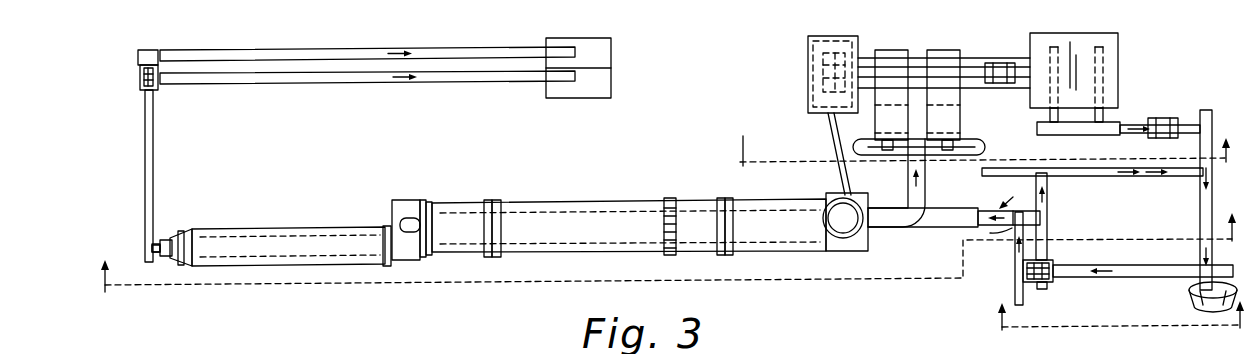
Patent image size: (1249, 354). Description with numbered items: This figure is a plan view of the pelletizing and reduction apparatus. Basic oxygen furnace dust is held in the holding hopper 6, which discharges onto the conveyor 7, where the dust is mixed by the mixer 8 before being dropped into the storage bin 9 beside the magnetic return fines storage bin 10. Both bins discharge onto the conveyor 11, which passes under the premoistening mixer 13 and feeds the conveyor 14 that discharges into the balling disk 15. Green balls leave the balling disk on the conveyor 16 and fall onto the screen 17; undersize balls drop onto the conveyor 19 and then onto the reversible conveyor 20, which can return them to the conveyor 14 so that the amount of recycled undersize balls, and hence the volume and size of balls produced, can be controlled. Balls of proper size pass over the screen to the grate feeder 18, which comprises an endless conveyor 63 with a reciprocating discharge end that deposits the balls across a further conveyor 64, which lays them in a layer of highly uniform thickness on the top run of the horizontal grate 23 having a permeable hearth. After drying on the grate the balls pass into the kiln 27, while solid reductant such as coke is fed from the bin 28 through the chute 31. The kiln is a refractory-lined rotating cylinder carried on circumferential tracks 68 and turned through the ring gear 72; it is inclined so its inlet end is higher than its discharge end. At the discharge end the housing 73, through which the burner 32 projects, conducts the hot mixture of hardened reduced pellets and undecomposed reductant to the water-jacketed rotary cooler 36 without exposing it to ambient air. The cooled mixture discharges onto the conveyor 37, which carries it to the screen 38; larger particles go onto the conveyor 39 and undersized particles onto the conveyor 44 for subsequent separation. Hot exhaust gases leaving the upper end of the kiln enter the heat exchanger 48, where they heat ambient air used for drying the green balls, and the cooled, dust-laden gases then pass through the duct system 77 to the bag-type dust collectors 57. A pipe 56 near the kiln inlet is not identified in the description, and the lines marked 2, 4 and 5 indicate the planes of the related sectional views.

The section line 2- 2 is at (666, 241).
The section line 4- 4 is at (982, 140).
The section line 5- 5 is at (1118, 327).
The holding hopper 6 is at (808, 46).
The conveyor 7 is at (966, 65).
The mixer 8 is at (999, 83).
The storage bin 9 is at (1040, 116).
The magnetic return fines storage bin 10 is at (1118, 59).
The conveyor 11 is at (1122, 124).
The premoistening mixer 13 is at (1168, 118).
The conveyor 14 is at (1200, 190).
The balling disk 15 is at (1193, 293).
The conveyor 16 is at (1132, 277).
The screen 17 is at (1049, 284).
The grate feeder 18 is at (1012, 195).
The conveyor 19 is at (1048, 232).
The conveyor 20 is at (1119, 176).
The horizontal grate 23 is at (976, 212).
The kiln 27 is at (609, 250).
The bin 28 is at (815, 96).
The chute 31 is at (828, 131).
The burner 32 is at (410, 218).
The cooler 36 is at (268, 228).
The conveyor 37 is at (154, 141).
The screen 38 is at (139, 74).
The conveyor 39 is at (256, 43).
The conveyor 44 is at (300, 83).
The heat exchanger 48 is at (847, 242).
The elbow pipe 56 is at (908, 184).
The dust collectors 57 is at (894, 38).
The endless conveyor 63 is at (1014, 258).
The conveyor 64 is at (978, 231).
The circumferential tracks 68 is at (496, 200).
The ring gear 72 is at (669, 198).
The housing 73 is at (392, 208).
The duct system 77 is at (860, 147).